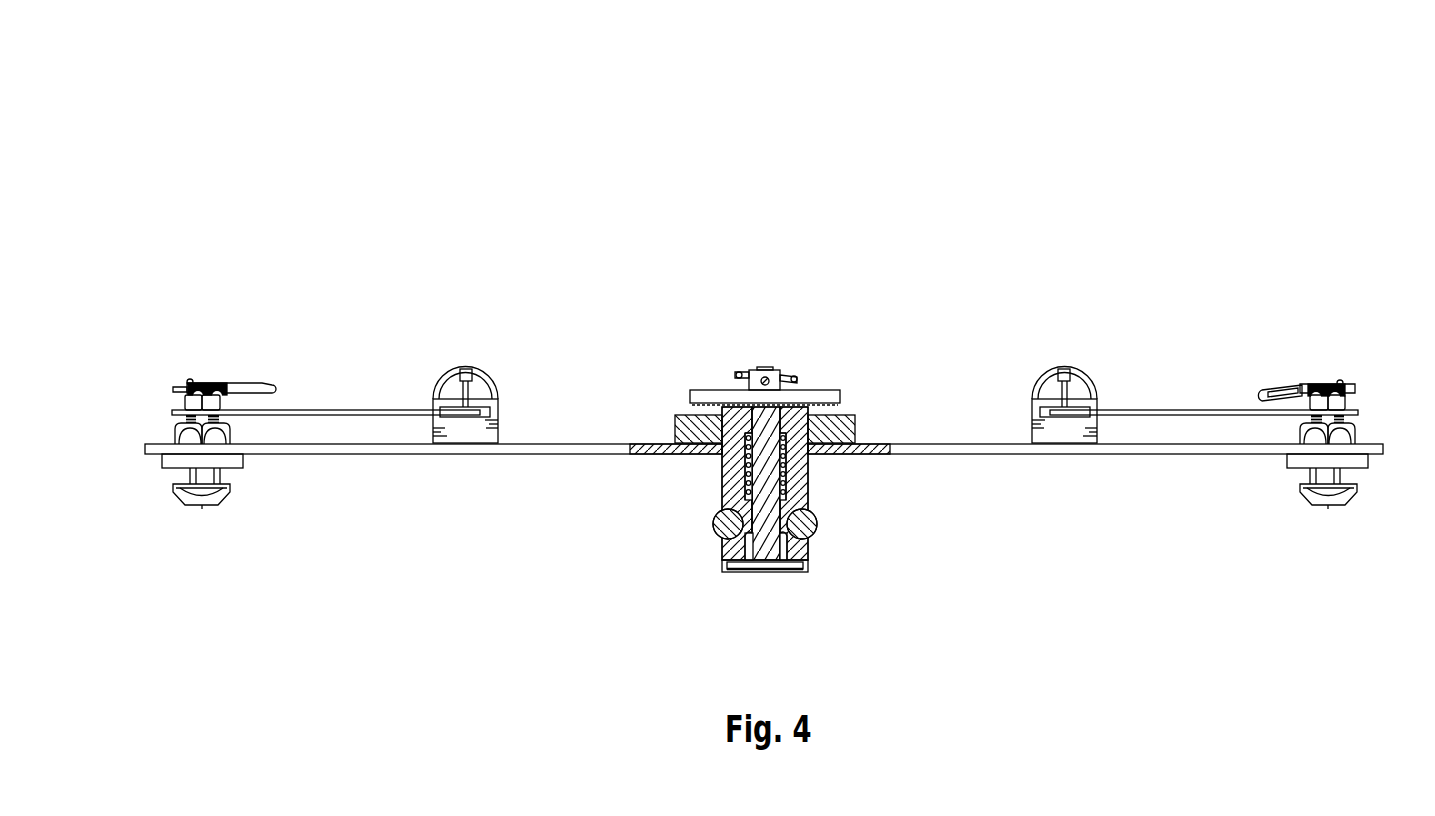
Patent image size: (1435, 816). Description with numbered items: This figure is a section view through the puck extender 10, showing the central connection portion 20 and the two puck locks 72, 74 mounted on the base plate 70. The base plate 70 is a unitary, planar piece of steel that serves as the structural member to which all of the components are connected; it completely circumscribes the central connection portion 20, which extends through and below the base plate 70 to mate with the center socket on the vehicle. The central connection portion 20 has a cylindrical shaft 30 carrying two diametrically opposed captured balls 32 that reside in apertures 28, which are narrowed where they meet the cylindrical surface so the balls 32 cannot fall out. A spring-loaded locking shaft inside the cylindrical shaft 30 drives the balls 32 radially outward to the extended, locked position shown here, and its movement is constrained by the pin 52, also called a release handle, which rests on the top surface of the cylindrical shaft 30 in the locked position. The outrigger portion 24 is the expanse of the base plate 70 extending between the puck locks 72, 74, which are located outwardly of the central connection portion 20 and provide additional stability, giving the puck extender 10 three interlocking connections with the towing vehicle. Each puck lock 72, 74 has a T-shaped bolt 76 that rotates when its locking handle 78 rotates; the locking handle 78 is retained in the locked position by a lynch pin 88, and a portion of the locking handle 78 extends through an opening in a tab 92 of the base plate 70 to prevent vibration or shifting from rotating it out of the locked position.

The puck extender 10 is at (765, 350).
The central connection portion 20 is at (756, 537).
The outrigger portion 24 is at (807, 366).
The apertures 28 is at (781, 601).
The cylindrical shaft 30 is at (822, 483).
The captured balls 32 is at (818, 545).
The pin 52 is at (764, 337).
The base plate 70 is at (764, 507).
The puck lock 72 is at (204, 358).
The puck lock 74 is at (1327, 356).
The T-shaped bolt 76 is at (765, 556).
The locking handle 78 is at (765, 352).
The lynch pin 88 is at (765, 346).
The tab 92 is at (501, 374).